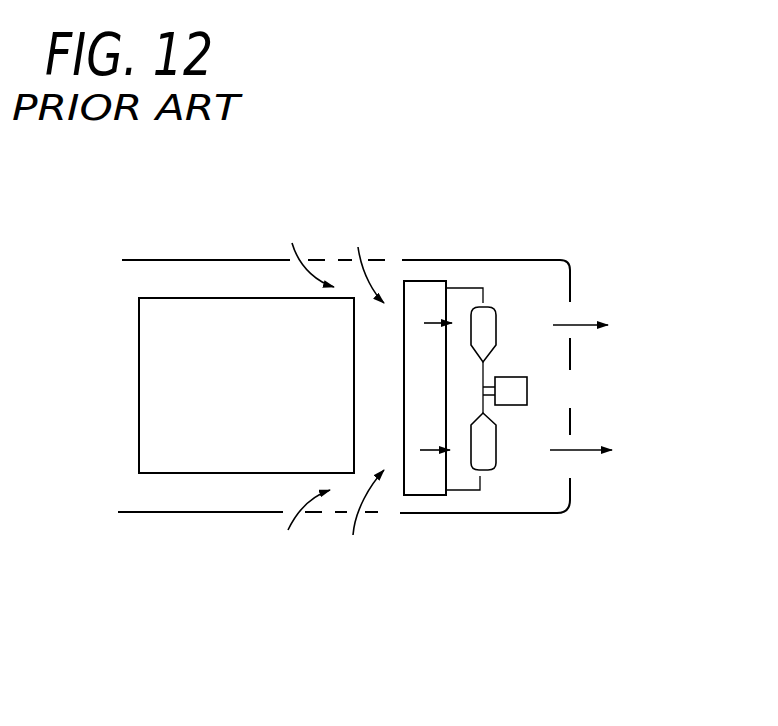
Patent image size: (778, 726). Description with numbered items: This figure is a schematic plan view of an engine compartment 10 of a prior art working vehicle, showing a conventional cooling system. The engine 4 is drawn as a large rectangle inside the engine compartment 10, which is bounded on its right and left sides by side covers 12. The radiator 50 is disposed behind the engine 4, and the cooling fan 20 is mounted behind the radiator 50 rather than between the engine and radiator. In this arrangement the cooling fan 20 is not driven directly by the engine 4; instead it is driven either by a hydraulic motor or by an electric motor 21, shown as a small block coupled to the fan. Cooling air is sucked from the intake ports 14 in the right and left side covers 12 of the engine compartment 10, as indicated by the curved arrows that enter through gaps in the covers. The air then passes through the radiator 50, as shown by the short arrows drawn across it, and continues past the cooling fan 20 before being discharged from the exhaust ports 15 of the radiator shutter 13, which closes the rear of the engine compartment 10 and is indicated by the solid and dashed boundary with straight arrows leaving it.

The engine compartment 10 is at (172, 260).
The side cover 12 is at (250, 260).
The intake port 14 is at (355, 262).
The radiator 50 is at (427, 281).
The radiator shutter 13 is at (570, 292).
The exhaust port 15 is at (568, 332).
The engine 4 is at (180, 473).
The cooling fan 20 is at (483, 470).
The electric motor 21 is at (515, 405).